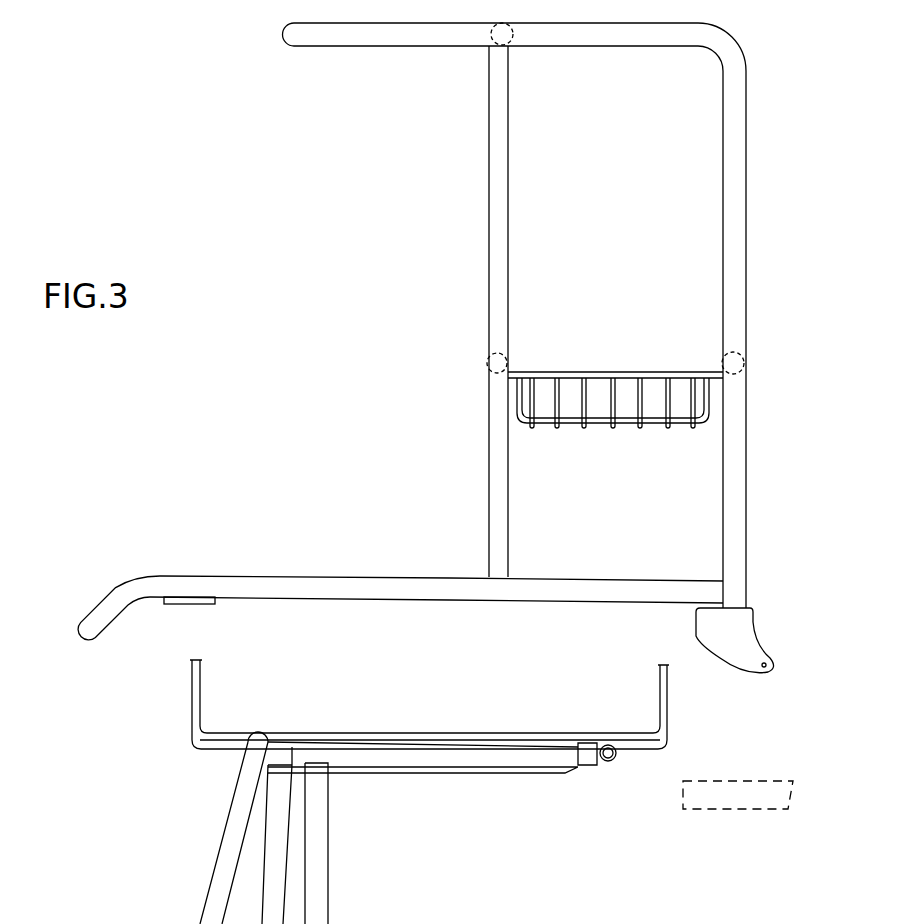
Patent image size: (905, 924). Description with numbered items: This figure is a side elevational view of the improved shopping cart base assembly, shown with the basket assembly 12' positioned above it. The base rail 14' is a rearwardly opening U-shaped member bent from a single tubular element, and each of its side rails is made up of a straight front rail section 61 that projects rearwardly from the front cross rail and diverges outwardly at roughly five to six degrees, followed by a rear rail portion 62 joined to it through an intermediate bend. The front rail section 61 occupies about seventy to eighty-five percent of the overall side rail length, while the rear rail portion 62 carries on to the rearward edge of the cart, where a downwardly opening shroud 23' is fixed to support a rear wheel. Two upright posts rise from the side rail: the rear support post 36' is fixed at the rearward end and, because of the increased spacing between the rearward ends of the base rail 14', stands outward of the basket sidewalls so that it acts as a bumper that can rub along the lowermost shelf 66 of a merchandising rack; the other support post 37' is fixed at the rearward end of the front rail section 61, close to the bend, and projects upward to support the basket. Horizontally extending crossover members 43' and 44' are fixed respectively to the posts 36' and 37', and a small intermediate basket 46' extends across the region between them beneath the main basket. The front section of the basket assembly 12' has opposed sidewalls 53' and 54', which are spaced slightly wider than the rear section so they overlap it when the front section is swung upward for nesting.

The rear support post 36' is at (755, 315).
The support post 37' is at (466, 311).
The crossover member 44' is at (462, 353).
The crossover member 43' is at (767, 353).
The intermediate basket 46' is at (615, 424).
The base rail 14' is at (400, 583).
The front rail section 61 is at (352, 592).
The rear rail portion 62 is at (642, 592).
The shroud 23' is at (761, 640).
The basket assembly 12' is at (421, 704).
The sidewall 53' is at (310, 704).
The sidewall 54' is at (580, 707).
The lowermost shelf 66 is at (708, 803).